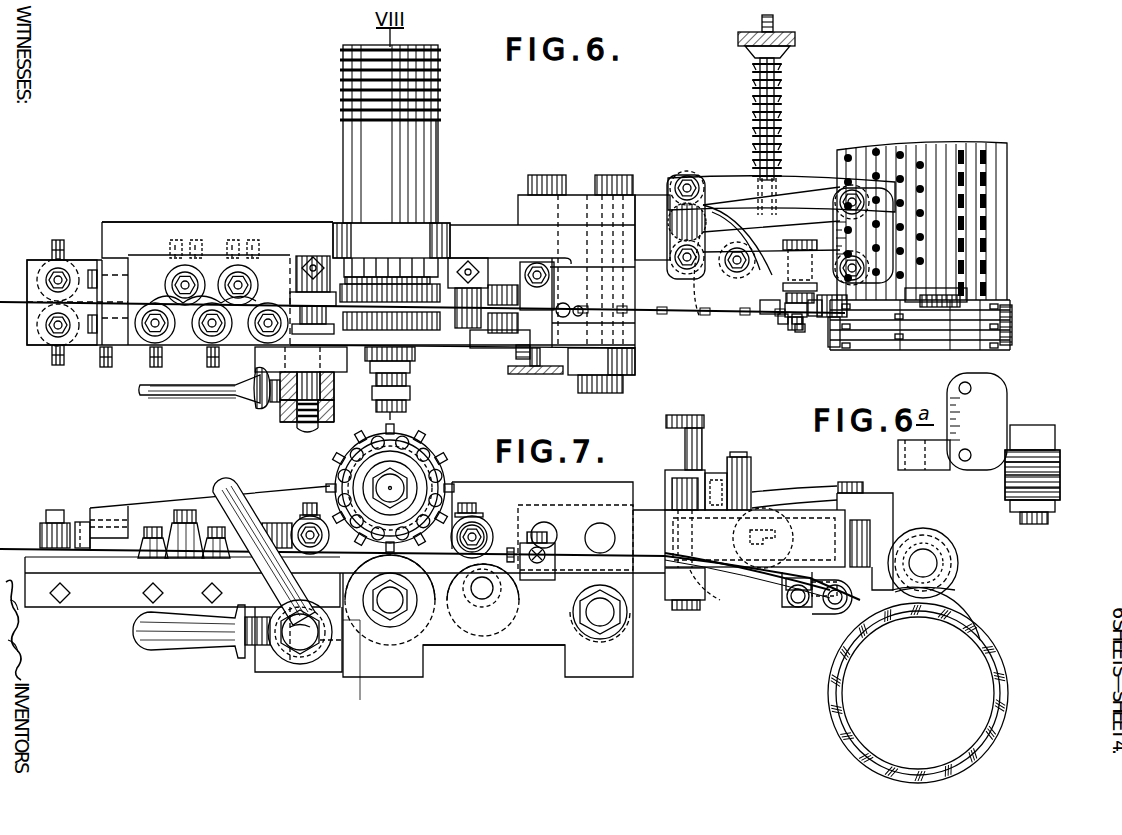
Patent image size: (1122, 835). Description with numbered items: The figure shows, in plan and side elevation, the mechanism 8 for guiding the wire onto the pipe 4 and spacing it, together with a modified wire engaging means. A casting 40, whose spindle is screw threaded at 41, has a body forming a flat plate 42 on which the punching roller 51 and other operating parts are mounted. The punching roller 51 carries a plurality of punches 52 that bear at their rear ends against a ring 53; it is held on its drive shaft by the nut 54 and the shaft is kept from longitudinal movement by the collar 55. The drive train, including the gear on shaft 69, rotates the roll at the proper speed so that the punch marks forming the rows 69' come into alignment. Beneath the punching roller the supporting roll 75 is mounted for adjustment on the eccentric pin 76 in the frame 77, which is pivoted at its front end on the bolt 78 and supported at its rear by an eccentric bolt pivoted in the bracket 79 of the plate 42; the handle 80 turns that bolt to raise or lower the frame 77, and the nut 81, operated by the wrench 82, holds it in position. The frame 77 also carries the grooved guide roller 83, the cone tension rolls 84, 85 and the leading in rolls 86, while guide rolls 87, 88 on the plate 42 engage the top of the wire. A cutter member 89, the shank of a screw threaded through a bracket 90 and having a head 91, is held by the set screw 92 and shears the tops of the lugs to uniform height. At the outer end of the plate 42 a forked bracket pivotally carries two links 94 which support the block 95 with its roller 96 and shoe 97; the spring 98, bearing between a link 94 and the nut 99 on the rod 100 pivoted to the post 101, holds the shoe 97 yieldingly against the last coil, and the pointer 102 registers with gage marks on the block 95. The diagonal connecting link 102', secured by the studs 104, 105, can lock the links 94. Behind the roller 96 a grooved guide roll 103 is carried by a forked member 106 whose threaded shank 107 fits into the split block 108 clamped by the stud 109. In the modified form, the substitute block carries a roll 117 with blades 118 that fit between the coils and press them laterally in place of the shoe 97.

In FIG. 6, the pipe 4 is at (1007, 198).
In FIG. 7, the pipe 4 is at (1005, 672).
In FIG. 6, the wire guiding mechanism 8 is at (542, 184).
In FIG. 7, the wire guiding mechanism 8 is at (542, 527).
In FIG. 6, the casting 40 is at (428, 130).
In FIG. 6, the screw threads 41 is at (343, 82).
In FIG. 6, the flat plate 42 is at (242, 226).
In FIG. 7, the flat plate 42 is at (262, 495).
In FIG. 7, the punching roller 51 is at (432, 460).
In FIG. 6, the punches 52 is at (406, 405).
In FIG. 7, the punches 52 is at (428, 447).
In FIG. 7, the ring 53 is at (345, 466).
In FIG. 6, the nut 54 is at (408, 368).
In FIG. 7, the nut 54 is at (410, 484).
In FIG. 6, the collar 55 is at (355, 240).
In FIG. 6, the shaft 69 is at (920, 341).
In FIG. 6, the rows of punch marks 69' is at (1013, 335).
In FIG. 6, the supporting roll 75 is at (420, 350).
In FIG. 7, the supporting roll 75 is at (415, 587).
In FIG. 7, the eccentric pin 76 is at (395, 612).
In FIG. 6, the frame 77 is at (462, 363).
In FIG. 7, the frame 77 is at (513, 635).
In FIG. 6, the bolt 78 is at (607, 338).
In FIG. 7, the bolt 78 is at (608, 614).
In FIG. 6, the bracket 79 is at (258, 358).
In FIG. 7, the bracket 79 is at (334, 675).
In FIG. 6, the handle 80 is at (145, 413).
In FIG. 7, the handle 80 is at (168, 640).
In FIG. 6, the nut 81 is at (334, 405).
In FIG. 7, the nut 81 is at (285, 645).
In FIG. 6, the wrench 82 is at (334, 384).
In FIG. 7, the wrench 82 is at (226, 490).
In FIG. 6, the grooved guide roller 83 is at (490, 265).
In FIG. 7, the grooved guide roller 83 is at (510, 592).
In FIG. 6, the cone tension roll 84 is at (205, 330).
In FIG. 7, the cone tension roll 84 is at (200, 550).
In FIG. 6, the cone tension roll 85 is at (238, 267).
In FIG. 7, the cone tension roll 85 is at (180, 530).
In FIG. 6, the leading in rolls 86 is at (45, 272).
In FIG. 7, the leading in rolls 86 is at (47, 550).
In FIG. 6, the guide roll 87 is at (298, 260).
In FIG. 7, the guide roll 87 is at (300, 528).
In FIG. 6, the guide roll 88 is at (468, 258).
In FIG. 7, the guide roll 88 is at (465, 520).
In FIG. 6, the cutter member 89 is at (565, 284).
In FIG. 6, the bracket 90 is at (560, 312).
In FIG. 7, the bracket 90 is at (540, 540).
In FIG. 6, the head 91 is at (535, 378).
In FIG. 7, the head 91 is at (532, 545).
In FIG. 6, the set screw 92 is at (523, 360).
In FIG. 7, the set screw 92 is at (510, 545).
In FIG. 6, the links 94 is at (802, 185).
In FIG. 7, the links 94 is at (806, 510).
In FIG. 6, the block 95 is at (870, 205).
In FIG. 7, the block 95 is at (878, 500).
In FIG. 6, the roller 96 is at (1005, 296).
In FIG. 7, the roller 96 is at (958, 564).
In FIG. 6, the shoe 97 is at (1000, 268).
In FIG. 7, the shoe 97 is at (970, 608).
In FIG. 6, the spring 98 is at (782, 90).
In FIG. 6, the nut 99 is at (796, 38).
In FIG. 6, the rod 100 is at (752, 87).
In FIG. 6, the post 101 is at (770, 320).
In FIG. 7, the post 101 is at (730, 570).
In FIG. 6, the pointer 102 is at (811, 235).
In FIG. 7, the pointer 102 is at (811, 476).
In FIG. 6, the diagonal connecting link 102' is at (751, 292).
In FIG. 7, the diagonal connecting link 102' is at (726, 464).
In FIG. 6, the grooved guide roll 103 is at (838, 350).
In FIG. 7, the grooved guide roll 103 is at (830, 603).
In FIG. 6, the stud 104 is at (735, 272).
In FIG. 7, the stud 104 is at (740, 492).
In FIG. 6, the stud 105 is at (690, 207).
In FIG. 7, the stud 105 is at (683, 495).
In FIG. 6, the forked member 106 is at (812, 316).
In FIG. 7, the forked member 106 is at (820, 605).
In FIG. 6, the screw threaded shank 107 is at (775, 325).
In FIG. 7, the screw threaded shank 107 is at (790, 590).
In FIG. 6, the split block 108 is at (785, 338).
In FIG. 7, the split block 108 is at (795, 602).
In FIG. 6, the clamping stud 109 is at (800, 325).
In FIG. 7, the clamping stud 109 is at (800, 605).
In FIG. 6A, the roll 117 is at (1065, 512).
In FIG. 6A, the blades 118 is at (1008, 504).